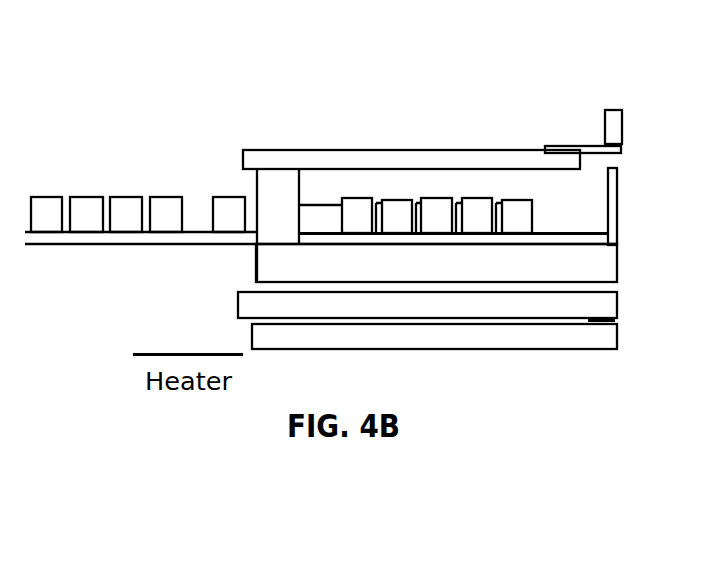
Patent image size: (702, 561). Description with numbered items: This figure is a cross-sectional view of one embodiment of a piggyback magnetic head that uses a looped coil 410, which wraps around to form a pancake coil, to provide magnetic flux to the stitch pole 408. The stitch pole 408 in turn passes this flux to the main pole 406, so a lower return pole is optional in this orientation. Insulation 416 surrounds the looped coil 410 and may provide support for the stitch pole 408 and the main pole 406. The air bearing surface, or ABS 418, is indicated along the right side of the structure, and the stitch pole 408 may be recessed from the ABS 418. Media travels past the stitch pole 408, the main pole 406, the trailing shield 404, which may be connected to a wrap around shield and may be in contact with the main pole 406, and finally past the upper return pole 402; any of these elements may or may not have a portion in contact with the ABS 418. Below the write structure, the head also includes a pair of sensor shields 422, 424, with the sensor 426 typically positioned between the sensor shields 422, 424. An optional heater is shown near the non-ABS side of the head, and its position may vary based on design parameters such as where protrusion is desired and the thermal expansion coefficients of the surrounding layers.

The upper return pole 402 is at (622, 123).
The trailing shield 404 is at (618, 210).
The main pole 406 is at (587, 146).
The stitch pole 408 is at (439, 150).
The looped coil 410 is at (506, 199).
The insulation 416 is at (490, 274).
The ABS 418 is at (625, 262).
The sensor shield 422 is at (238, 305).
The sensor shield 424 is at (252, 331).
The sensor 426 is at (606, 318).